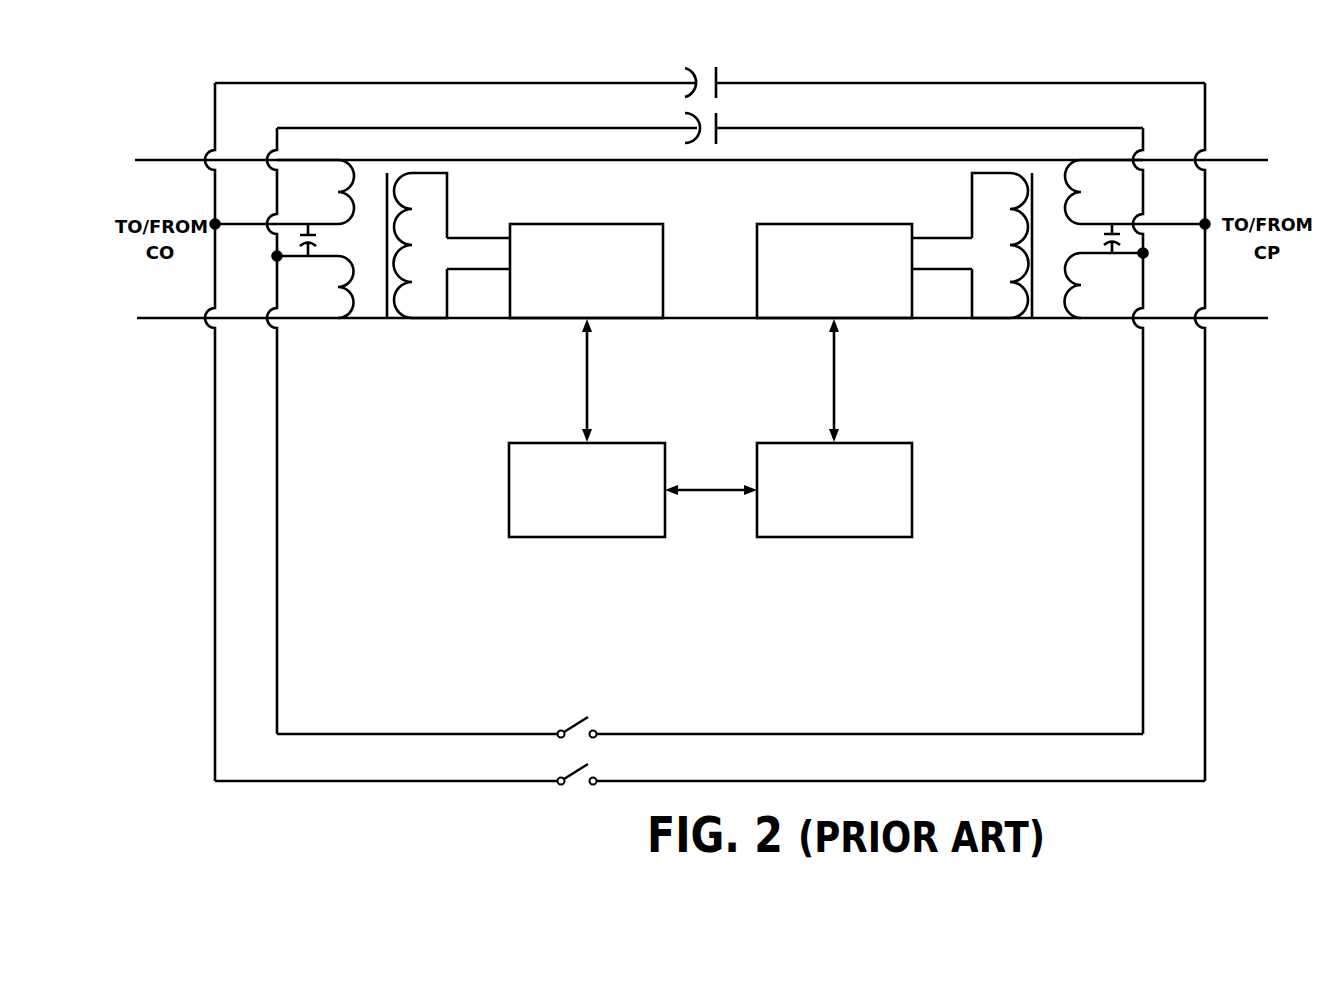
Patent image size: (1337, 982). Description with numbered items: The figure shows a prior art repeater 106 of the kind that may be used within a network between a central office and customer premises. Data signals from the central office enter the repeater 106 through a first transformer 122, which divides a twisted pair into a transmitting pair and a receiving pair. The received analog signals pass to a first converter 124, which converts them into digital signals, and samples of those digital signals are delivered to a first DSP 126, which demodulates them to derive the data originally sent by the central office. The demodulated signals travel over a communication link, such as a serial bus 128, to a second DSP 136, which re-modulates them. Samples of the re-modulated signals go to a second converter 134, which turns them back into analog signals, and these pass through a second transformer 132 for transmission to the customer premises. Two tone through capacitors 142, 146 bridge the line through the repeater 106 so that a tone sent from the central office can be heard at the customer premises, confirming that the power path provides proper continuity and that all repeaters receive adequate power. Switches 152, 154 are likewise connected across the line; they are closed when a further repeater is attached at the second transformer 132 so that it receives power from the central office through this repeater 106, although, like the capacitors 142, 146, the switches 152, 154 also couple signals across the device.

The repeater 106 is at (1176, 807).
The first transformer 122 is at (300, 318).
The first converter 124 is at (586, 224).
The first DSP 126 is at (608, 443).
The serial bus 128 is at (702, 491).
The second transformer 132 is at (1103, 318).
The second converter 134 is at (836, 224).
The second DSP 136 is at (873, 443).
The tone through capacitor 142 is at (702, 62).
The tone through capacitor 146 is at (700, 158).
The switch 152 is at (563, 712).
The switch 154 is at (582, 803).